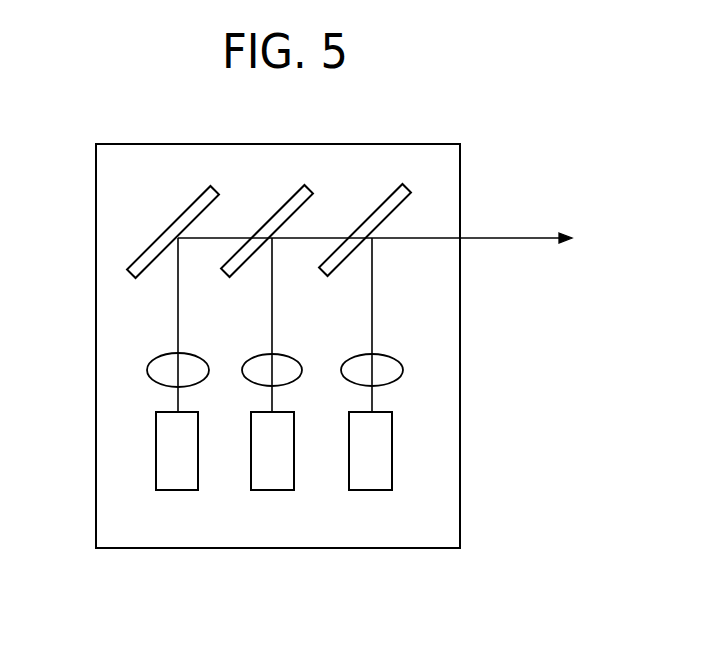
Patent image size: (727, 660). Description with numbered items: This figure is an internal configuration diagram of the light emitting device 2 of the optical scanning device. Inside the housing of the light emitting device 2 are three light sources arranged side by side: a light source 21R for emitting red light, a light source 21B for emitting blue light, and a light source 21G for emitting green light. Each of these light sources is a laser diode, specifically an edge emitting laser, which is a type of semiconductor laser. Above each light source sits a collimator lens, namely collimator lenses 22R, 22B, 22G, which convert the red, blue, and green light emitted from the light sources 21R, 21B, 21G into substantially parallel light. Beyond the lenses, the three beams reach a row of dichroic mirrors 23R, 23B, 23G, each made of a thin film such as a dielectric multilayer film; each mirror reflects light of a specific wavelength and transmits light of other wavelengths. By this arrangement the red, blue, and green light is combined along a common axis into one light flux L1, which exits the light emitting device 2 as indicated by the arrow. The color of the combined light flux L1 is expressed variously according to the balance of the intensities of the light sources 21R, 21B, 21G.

The light emitting device 2 is at (160, 144).
The light flux L1 is at (480, 238).
The light source 21R is at (158, 490).
The light source 21B is at (253, 490).
The light source 21G is at (352, 490).
The collimator lens 22R is at (162, 352).
The collimator lens 22B is at (257, 352).
The collimator lens 22G is at (352, 352).
The dichroic mirror 23R is at (187, 203).
The dichroic mirror 23B is at (283, 203).
The dichroic mirror 23G is at (383, 203).